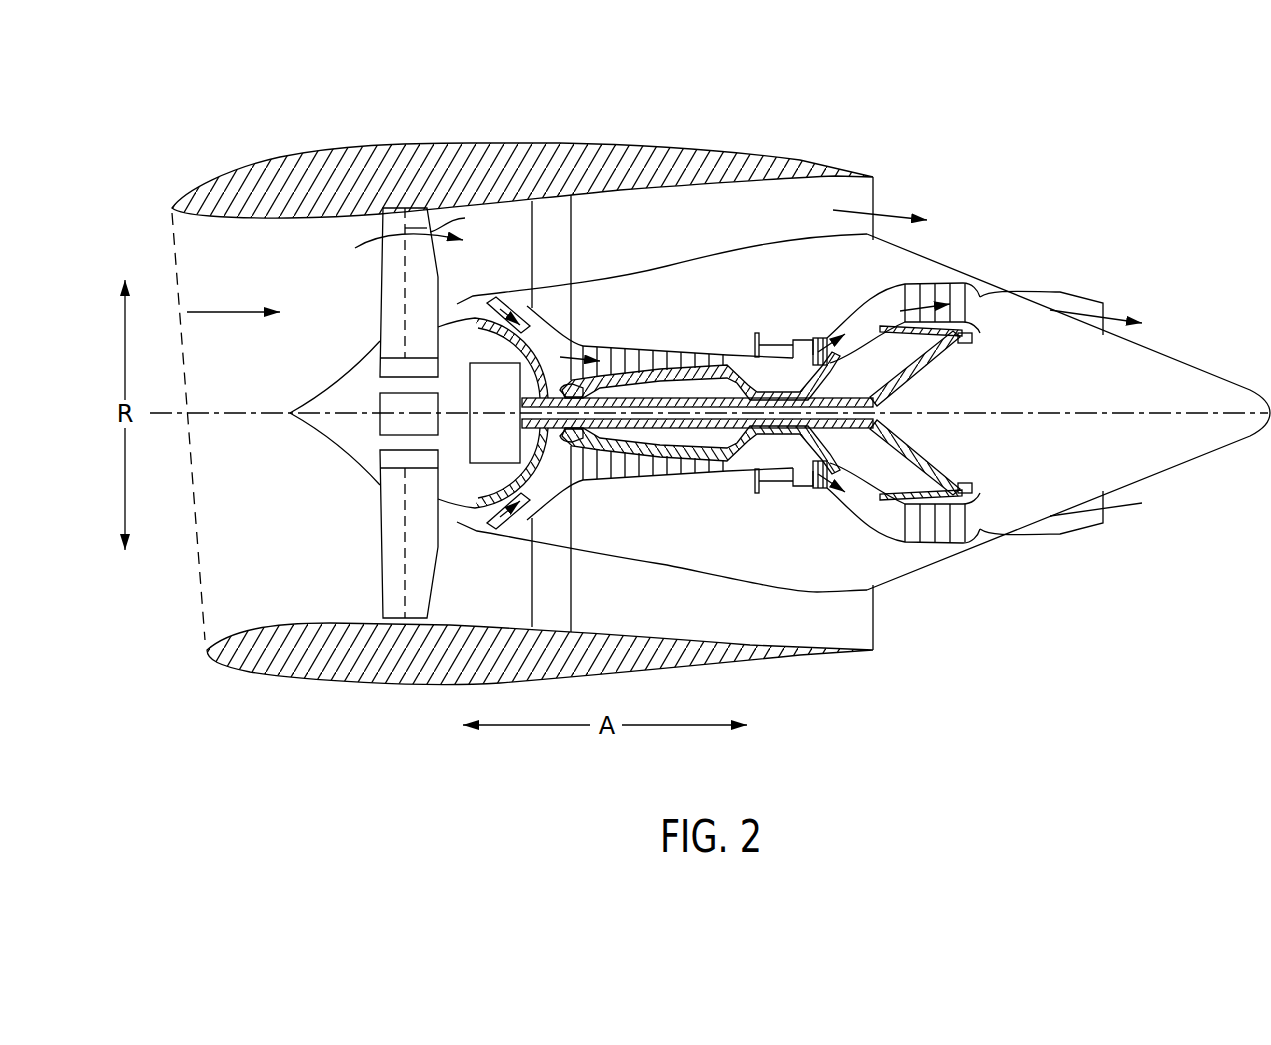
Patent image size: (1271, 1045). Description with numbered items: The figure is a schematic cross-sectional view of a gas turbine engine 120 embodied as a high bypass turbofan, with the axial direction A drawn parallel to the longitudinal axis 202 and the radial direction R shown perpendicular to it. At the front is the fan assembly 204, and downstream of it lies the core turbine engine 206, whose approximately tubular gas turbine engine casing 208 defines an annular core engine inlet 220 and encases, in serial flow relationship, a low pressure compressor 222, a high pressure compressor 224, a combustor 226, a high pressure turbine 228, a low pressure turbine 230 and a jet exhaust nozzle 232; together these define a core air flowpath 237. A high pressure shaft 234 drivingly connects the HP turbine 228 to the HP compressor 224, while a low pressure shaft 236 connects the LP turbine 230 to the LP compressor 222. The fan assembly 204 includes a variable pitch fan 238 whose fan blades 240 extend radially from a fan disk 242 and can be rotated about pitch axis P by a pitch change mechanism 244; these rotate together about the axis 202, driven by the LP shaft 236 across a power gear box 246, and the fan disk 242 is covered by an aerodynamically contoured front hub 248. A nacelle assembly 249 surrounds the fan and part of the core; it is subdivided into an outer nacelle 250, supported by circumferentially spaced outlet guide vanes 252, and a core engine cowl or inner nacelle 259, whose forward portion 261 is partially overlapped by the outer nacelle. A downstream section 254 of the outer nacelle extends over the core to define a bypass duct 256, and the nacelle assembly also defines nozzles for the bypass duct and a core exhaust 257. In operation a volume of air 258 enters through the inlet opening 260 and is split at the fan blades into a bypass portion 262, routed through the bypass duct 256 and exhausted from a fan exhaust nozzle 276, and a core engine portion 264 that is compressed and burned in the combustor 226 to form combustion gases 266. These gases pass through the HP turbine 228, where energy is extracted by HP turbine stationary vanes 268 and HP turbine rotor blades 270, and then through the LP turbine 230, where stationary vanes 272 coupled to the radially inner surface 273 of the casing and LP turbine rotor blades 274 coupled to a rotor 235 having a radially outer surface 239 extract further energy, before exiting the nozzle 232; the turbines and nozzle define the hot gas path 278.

The gas turbine engine 120 is at (1047, 178).
The longitudinal axis 202 is at (1087, 413).
The fan assembly 204 is at (332, 227).
The core turbine engine 206 is at (720, 283).
The gas turbine engine casing 208 is at (700, 465).
The core engine inlet 220 is at (483, 518).
The low pressure compressor 222 is at (540, 462).
The high pressure compressor 224 is at (607, 463).
The combustor 226 is at (777, 480).
The high pressure turbine 228 is at (920, 497).
The low pressure turbine 230 is at (952, 532).
The jet exhaust nozzle 232 is at (1013, 522).
The high pressure shaft 234 is at (757, 340).
The rotor 235 is at (961, 343).
The low pressure shaft 236 is at (833, 392).
The core air flowpath 237 is at (590, 475).
The variable pitch fan 238 is at (350, 467).
The radially outer surface 239 is at (967, 331).
The fan blades 240 is at (380, 565).
The fan disk 242 is at (395, 368).
The pitch change mechanism 244 is at (380, 407).
The power gear box 246 is at (505, 377).
The front hub 248 is at (307, 437).
The nacelle assembly 249 is at (850, 678).
The outer nacelle 250 is at (408, 685).
The outlet guide vanes 252 is at (571, 243).
The downstream section 254 is at (790, 152).
The bypass duct 256 is at (744, 228).
The core exhaust 257 is at (1083, 510).
The volume of air 258 is at (187, 312).
The inner nacelle 259 is at (897, 578).
The inlet opening 260 is at (202, 587).
The forward portion 261 is at (657, 560).
The bypass portion 262 is at (390, 240).
The core engine portion 264 is at (457, 304).
The combustion gases 266 is at (813, 338).
The HP turbine stationary vanes 268 is at (795, 478).
The HP turbine rotor blades 270 is at (823, 455).
The stationary vanes 272 is at (885, 520).
The radially inner surface 273 is at (867, 322).
The LP turbine rotor blades 274 is at (902, 532).
The fan exhaust nozzle 276 is at (853, 190).
The hot gas path 278 is at (850, 318).